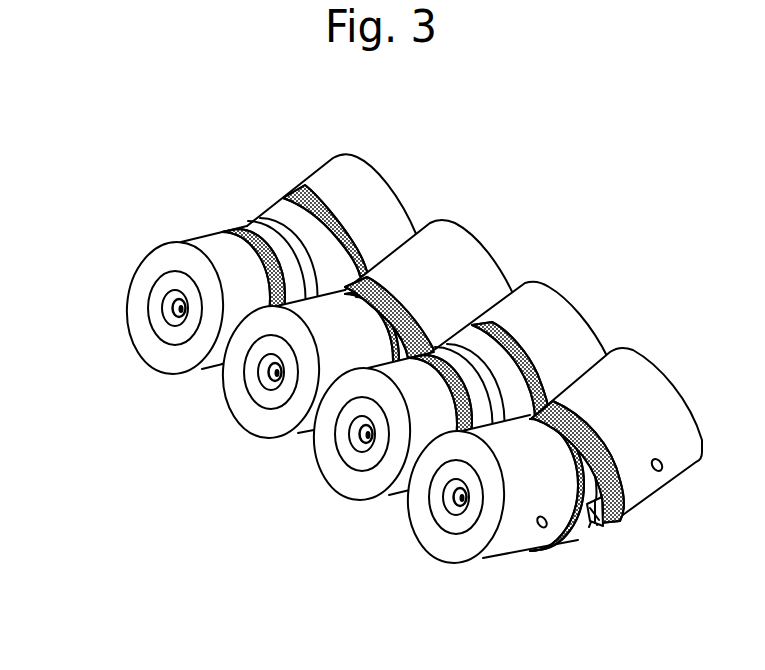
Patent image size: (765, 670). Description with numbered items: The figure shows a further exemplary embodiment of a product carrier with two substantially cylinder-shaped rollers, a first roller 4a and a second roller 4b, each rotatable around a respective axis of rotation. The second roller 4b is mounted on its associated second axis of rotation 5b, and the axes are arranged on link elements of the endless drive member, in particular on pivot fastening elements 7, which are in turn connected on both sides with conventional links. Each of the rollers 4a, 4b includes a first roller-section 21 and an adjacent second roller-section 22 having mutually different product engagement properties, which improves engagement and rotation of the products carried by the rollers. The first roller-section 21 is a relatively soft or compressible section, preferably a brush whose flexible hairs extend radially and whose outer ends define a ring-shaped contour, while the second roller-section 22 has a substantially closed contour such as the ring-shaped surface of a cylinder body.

The first roller 4a is at (379, 295).
The second roller 4b is at (347, 408).
The first roller-section 21 is at (380, 202).
The second roller-section 22 is at (299, 196).
The second axis of rotation 5b is at (272, 420).
The pivot fastening element 7 is at (603, 523).